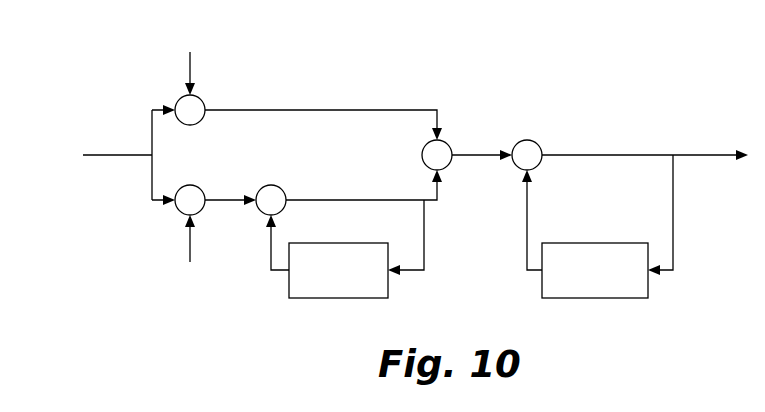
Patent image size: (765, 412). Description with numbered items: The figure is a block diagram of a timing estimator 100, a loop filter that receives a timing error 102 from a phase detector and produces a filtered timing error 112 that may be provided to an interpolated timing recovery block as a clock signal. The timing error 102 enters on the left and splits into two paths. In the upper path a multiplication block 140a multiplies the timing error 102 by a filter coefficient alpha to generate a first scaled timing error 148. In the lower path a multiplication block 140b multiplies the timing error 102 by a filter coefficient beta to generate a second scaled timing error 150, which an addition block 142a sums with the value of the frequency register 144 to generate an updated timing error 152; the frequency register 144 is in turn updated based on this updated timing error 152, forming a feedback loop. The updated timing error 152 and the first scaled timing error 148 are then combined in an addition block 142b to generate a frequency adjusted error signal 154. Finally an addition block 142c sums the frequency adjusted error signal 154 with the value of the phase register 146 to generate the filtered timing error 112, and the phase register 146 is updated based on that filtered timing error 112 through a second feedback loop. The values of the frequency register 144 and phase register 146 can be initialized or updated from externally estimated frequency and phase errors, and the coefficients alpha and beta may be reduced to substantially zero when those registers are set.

The timing estimator 100 is at (481, 61).
The timing error 102 is at (107, 157).
The multiplication block 140a is at (190, 125).
The multiplication block 140b is at (198, 187).
The addition block 142a is at (276, 187).
The addition block 142b is at (447, 144).
The addition block 142c is at (535, 142).
The frequency register 144 is at (315, 298).
The phase register 146 is at (567, 298).
The first scaled timing error 148 is at (283, 112).
The second scaled timing error 150 is at (225, 202).
The updated timing error 152 is at (348, 200).
The frequency adjusted error signal 154 is at (470, 157).
The filtered timing error 112 is at (638, 155).